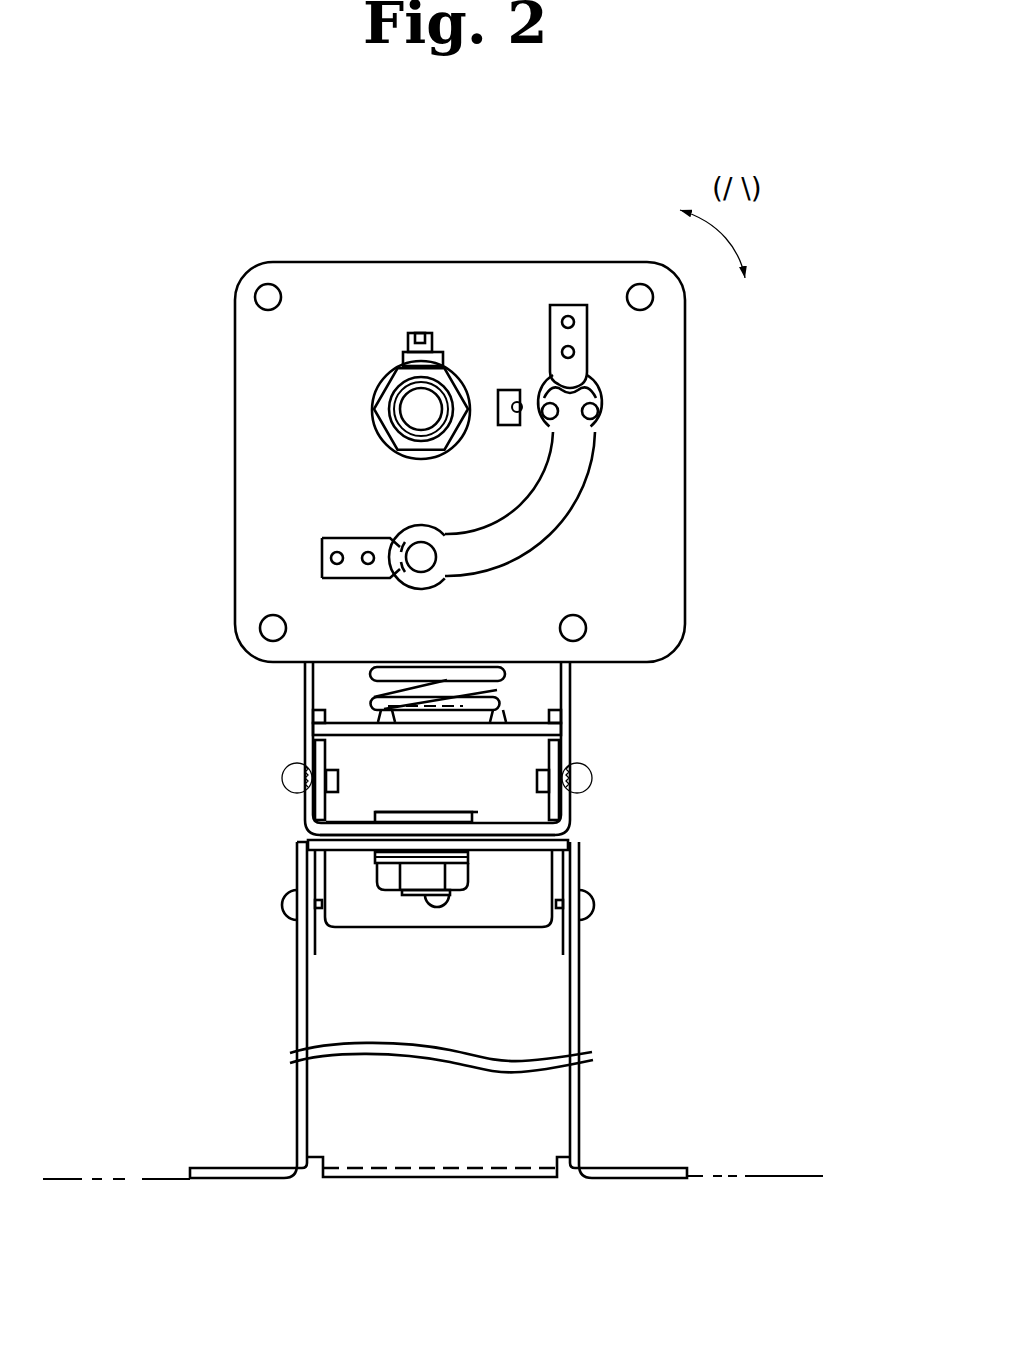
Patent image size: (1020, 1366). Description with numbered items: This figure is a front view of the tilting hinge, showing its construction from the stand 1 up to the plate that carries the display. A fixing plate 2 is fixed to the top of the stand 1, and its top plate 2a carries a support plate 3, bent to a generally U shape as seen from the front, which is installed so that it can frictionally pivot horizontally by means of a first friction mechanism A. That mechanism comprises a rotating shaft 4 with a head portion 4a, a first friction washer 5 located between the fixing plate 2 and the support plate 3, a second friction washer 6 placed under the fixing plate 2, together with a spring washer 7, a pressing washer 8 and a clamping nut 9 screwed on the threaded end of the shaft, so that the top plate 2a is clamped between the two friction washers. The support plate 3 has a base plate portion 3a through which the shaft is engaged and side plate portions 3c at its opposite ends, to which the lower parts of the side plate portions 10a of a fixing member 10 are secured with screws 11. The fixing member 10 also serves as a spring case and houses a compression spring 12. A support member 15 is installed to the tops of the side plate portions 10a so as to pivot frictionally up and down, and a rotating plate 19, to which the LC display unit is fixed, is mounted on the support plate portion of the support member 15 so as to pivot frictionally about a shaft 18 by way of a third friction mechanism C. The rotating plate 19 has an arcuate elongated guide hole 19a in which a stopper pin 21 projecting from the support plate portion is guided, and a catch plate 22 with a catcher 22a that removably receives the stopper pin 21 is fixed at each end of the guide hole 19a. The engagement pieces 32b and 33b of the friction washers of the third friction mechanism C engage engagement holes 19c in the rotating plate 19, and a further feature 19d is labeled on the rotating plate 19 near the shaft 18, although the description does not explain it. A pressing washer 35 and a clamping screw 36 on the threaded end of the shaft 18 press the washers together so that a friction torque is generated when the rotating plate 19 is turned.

The stand 1 is at (580, 997).
The fixing plate 2 is at (554, 882).
The top plate 2a is at (567, 840).
The support plate 3 is at (345, 820).
The base plate portion 3a is at (365, 818).
The side plate portions 3c is at (320, 752).
The rotating shaft 4 is at (465, 807).
The head portion 4a is at (434, 812).
The first friction washer 5 is at (314, 835).
The second friction washer 6 is at (378, 855).
The spring washer 7 is at (455, 860).
The pressing washer 8 is at (455, 865).
The clamping nut 9 is at (418, 890).
The fixing member 10 is at (572, 693).
The side plate portions 10a is at (313, 718).
The screws 11 is at (290, 790).
The compression spring 12 is at (500, 665).
The support member 15 is at (514, 462).
The shaft 18 is at (428, 400).
The rotating plate 19 is at (672, 536).
The arcuate elongated guide hole 19a is at (552, 503).
The engagement holes 19c is at (513, 426).
The tab 19d is at (417, 336).
The stopper pin 21 is at (420, 550).
The catch plate 22 is at (587, 336).
The catcher 22a is at (596, 420).
The engagement piece 32b is at (505, 390).
The engagement piece 33b is at (410, 356).
The pressing washer 35 is at (373, 392).
The clamping screw 36 is at (387, 432).
The first friction mechanism A is at (480, 813).
The third friction mechanism C is at (379, 346).